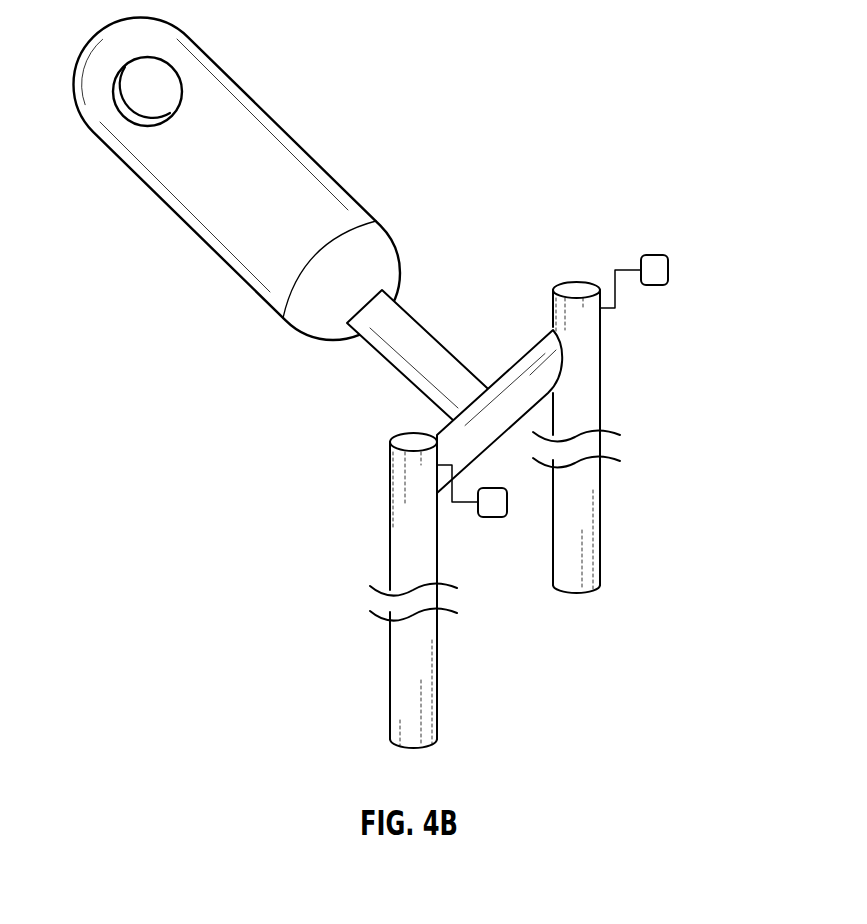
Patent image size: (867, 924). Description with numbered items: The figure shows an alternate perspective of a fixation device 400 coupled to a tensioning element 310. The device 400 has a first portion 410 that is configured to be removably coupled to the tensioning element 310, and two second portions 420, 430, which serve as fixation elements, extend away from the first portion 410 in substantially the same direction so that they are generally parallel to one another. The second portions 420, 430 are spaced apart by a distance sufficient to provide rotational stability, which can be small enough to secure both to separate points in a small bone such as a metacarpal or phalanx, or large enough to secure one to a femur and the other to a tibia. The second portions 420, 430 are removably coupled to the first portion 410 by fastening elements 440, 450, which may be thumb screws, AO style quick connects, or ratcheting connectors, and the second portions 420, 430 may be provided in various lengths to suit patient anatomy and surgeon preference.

The tensioning element 310 is at (167, 210).
The device 400 is at (630, 89).
The first portion 410 is at (408, 308).
The second portion 420 is at (424, 692).
The second portion 430 is at (593, 540).
The fastening element 440 is at (490, 518).
The fastening element 450 is at (669, 268).